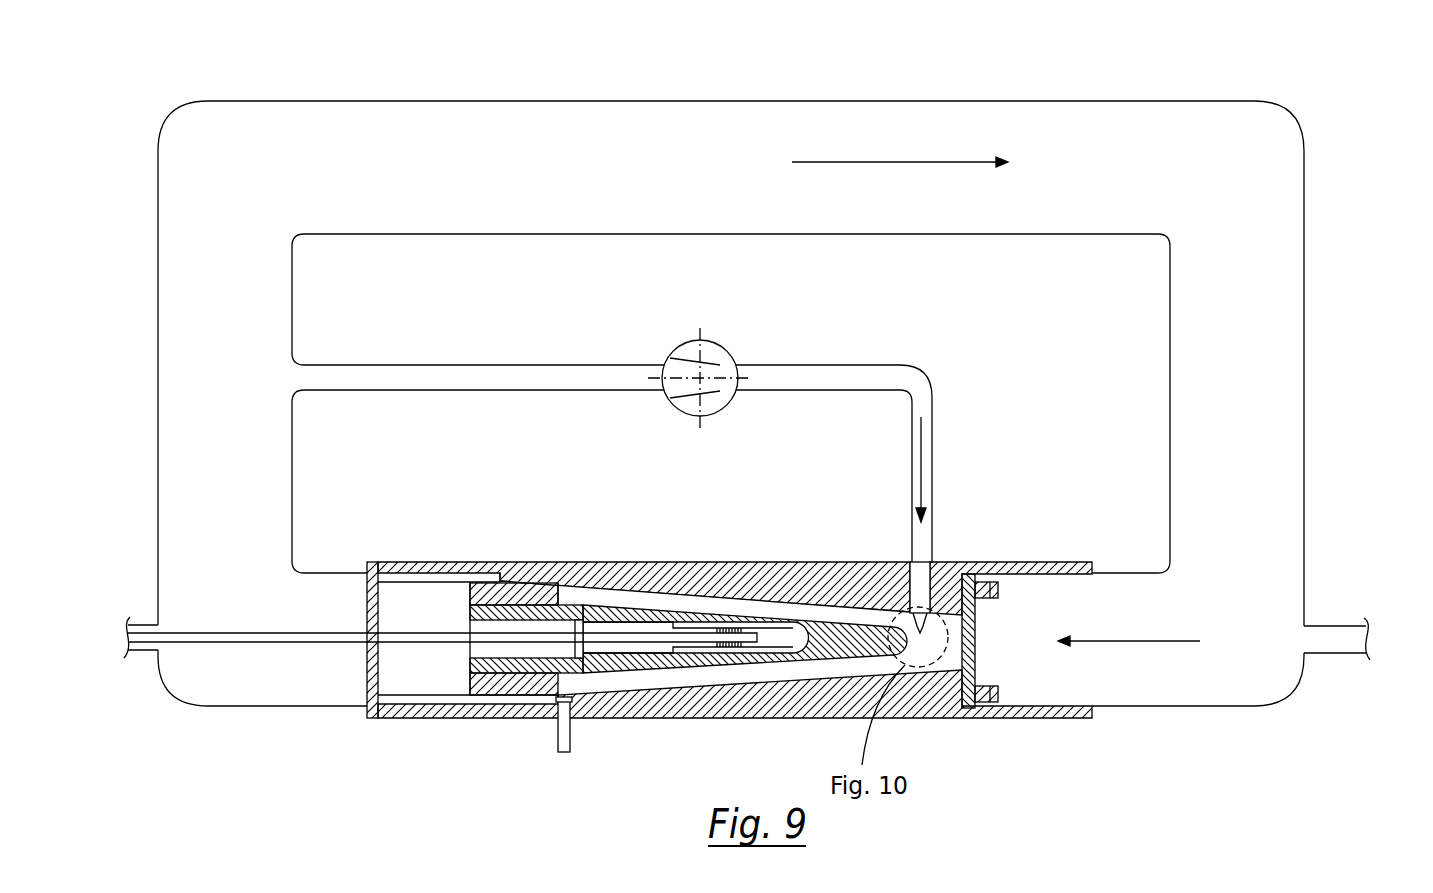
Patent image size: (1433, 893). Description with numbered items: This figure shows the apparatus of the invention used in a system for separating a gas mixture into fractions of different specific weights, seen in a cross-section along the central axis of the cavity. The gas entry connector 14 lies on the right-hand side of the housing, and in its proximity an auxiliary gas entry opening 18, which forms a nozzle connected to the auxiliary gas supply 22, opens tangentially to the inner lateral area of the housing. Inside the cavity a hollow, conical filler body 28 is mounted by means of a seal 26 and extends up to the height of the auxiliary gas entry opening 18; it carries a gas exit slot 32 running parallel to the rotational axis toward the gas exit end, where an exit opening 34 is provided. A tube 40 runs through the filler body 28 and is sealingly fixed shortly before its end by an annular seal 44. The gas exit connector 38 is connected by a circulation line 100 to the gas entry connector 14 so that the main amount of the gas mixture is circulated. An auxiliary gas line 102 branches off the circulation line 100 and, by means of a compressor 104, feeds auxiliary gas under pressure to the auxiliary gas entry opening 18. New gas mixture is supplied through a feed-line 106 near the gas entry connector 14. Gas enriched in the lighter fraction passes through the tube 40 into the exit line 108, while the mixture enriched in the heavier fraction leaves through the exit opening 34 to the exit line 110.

The circulation line 100 is at (848, 140).
The auxiliary gas line 102 is at (410, 370).
The compressor 104 is at (712, 357).
The feed-line 106 is at (1327, 637).
The exit line for the lighter fraction 108 is at (138, 632).
The exit line 110 is at (563, 740).
The gas entry connector 14 is at (980, 640).
The auxiliary gas entry opening 18 is at (905, 612).
The auxiliary gas supply 22 is at (930, 575).
The seal 26 is at (500, 690).
The filler body 28 is at (843, 610).
The gas exit slot 32 is at (622, 600).
The exit opening 34 is at (558, 718).
The gas exit connector 38 is at (393, 687).
The tube 40 is at (438, 637).
The annular seal 44 is at (733, 630).